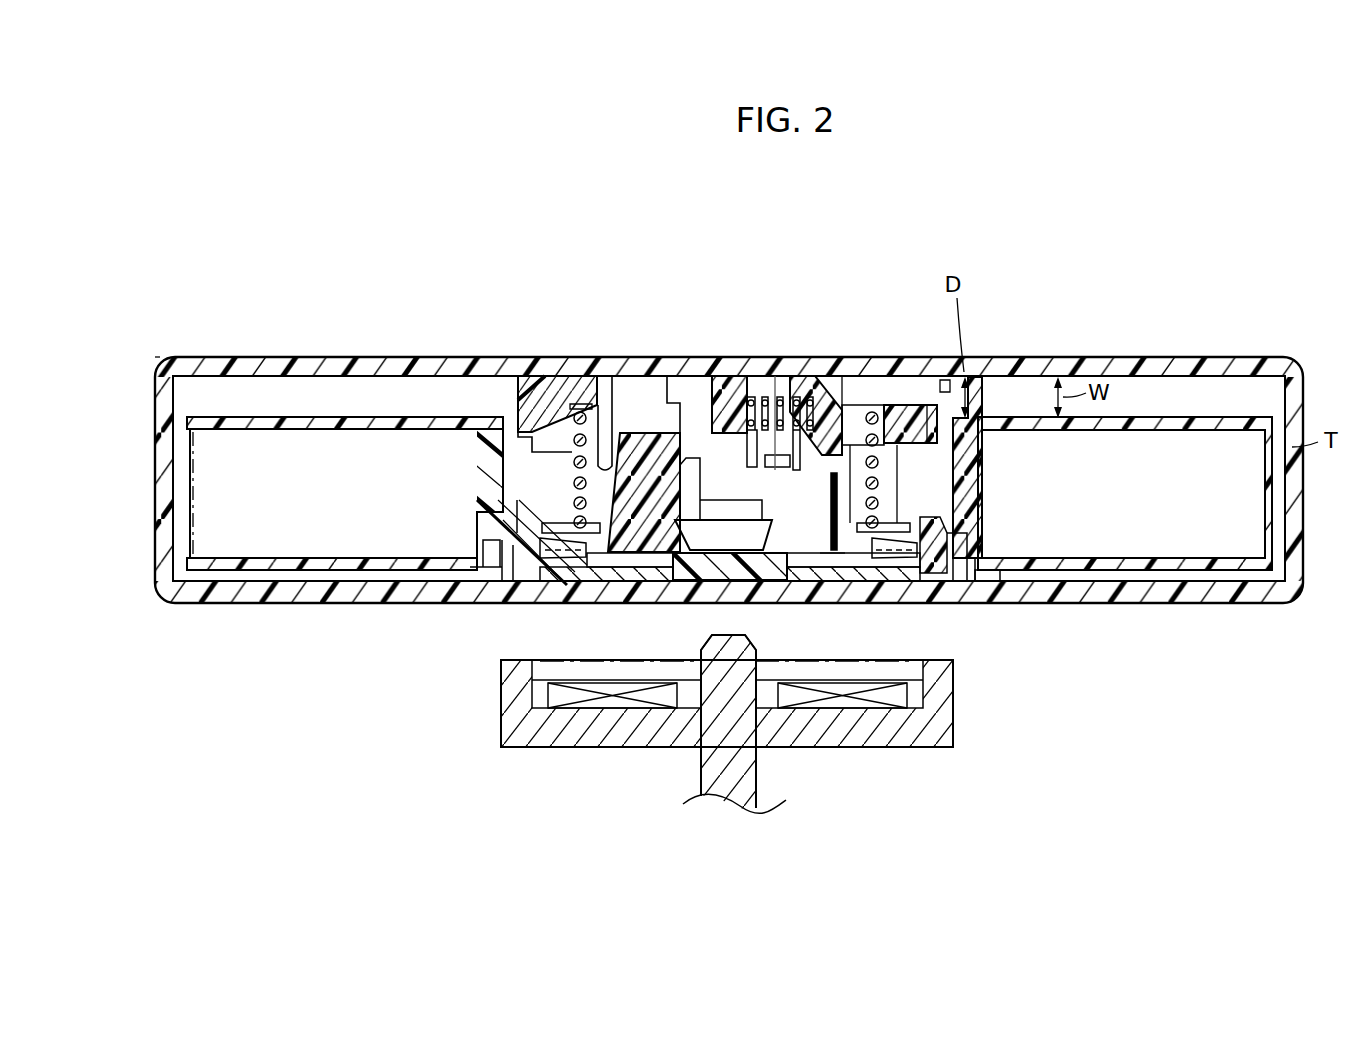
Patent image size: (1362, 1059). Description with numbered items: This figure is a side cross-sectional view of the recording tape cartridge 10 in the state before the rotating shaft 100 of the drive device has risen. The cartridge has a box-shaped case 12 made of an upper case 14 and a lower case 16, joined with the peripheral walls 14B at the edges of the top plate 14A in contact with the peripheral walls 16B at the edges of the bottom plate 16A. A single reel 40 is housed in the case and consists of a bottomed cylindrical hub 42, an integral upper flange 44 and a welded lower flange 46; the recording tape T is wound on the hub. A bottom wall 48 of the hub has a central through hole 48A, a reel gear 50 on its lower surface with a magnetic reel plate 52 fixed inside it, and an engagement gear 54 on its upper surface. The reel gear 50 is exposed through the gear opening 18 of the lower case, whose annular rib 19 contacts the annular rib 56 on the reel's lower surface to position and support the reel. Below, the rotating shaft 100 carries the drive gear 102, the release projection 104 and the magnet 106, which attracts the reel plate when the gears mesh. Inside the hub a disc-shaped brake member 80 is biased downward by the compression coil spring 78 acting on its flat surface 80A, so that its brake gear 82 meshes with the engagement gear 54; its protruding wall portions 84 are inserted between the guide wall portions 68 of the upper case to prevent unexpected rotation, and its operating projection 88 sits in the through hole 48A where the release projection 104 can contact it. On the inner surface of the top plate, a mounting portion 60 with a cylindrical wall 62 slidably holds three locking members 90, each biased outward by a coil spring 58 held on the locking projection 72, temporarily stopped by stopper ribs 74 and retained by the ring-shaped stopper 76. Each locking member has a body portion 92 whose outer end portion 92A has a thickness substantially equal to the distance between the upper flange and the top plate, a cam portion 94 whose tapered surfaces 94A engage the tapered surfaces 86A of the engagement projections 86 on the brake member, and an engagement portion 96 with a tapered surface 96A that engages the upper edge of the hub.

The recording tape cartridge 10 is at (1218, 320).
The case 12 is at (1102, 358).
The upper case 14 is at (1293, 362).
The top plate 14A is at (1142, 397).
The peripheral walls 14B is at (166, 414).
The lower case 16 is at (1300, 593).
The bottom plate 16A is at (1116, 578).
The peripheral walls 16B is at (163, 548).
The gear opening 18 is at (973, 590).
The annular rib 19 is at (1002, 584).
The reel 40 is at (287, 415).
The hub 42 is at (983, 503).
The upper flange 44 is at (336, 416).
The lower flange 46 is at (303, 572).
The bottom wall 48 is at (876, 580).
The through hole 48A is at (770, 592).
The reel gear 50 is at (529, 592).
The reel plate 52 is at (607, 595).
The engagement gear 54 is at (560, 540).
The annular rib 56 is at (960, 592).
The coil spring 58 is at (750, 396).
The mounting portion 60 is at (512, 398).
The cylindrical wall 62 is at (940, 433).
The guide wall portions 68 is at (625, 420).
The locking projection 72 is at (708, 418).
The stopper ribs 74 is at (1038, 378).
The stopper 76 is at (578, 408).
The compression coil spring 78 is at (885, 420).
The brake member 80 is at (605, 395).
The flat surface 80A is at (567, 527).
The brake gear 82 is at (885, 525).
The protruding wall portions 84 is at (655, 420).
The engagement projections 86 is at (835, 470).
The tapered surfaces 86A is at (834, 582).
The operating projection 88 is at (755, 582).
The locking members 90 is at (853, 380).
The body portion 92 is at (915, 405).
The outer end portion 92A is at (958, 386).
The cam portion 94 is at (779, 396).
The tapered surfaces 94A is at (800, 396).
The engagement portion 96 is at (962, 466).
The tapered surface 96A is at (984, 441).
The rotating shaft 100 is at (758, 777).
The drive gear 102 is at (945, 669).
The release projection 104 is at (708, 643).
The magnet 106 is at (898, 697).